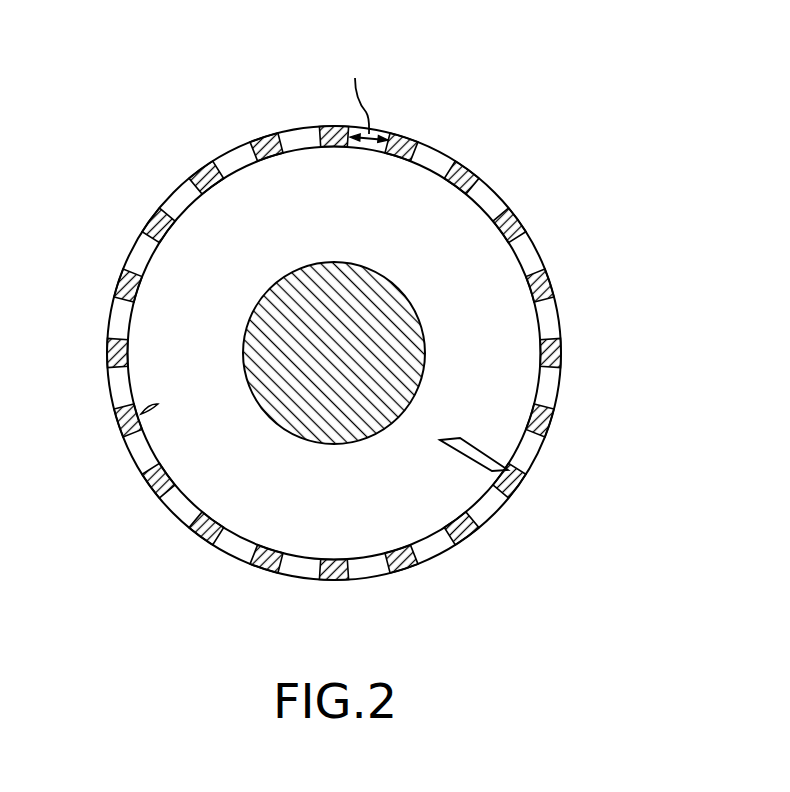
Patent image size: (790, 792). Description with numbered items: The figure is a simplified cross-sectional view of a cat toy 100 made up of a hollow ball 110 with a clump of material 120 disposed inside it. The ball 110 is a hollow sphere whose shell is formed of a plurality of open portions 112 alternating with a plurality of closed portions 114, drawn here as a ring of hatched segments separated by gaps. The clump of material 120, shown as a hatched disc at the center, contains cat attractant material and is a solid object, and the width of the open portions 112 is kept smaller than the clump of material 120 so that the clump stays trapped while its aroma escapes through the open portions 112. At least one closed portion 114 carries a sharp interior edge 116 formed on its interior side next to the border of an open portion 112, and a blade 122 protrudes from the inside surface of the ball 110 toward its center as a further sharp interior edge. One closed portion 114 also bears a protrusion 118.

The cat toy 100 is at (118, 107).
The hollow ball 110 is at (572, 353).
The open portions 112 is at (487, 198).
The closed portions 114 is at (407, 133).
The sharp interior edge 116 is at (167, 256).
The protrusion 118 is at (166, 424).
The clump of material 120 is at (324, 261).
The blade 122 is at (462, 455).